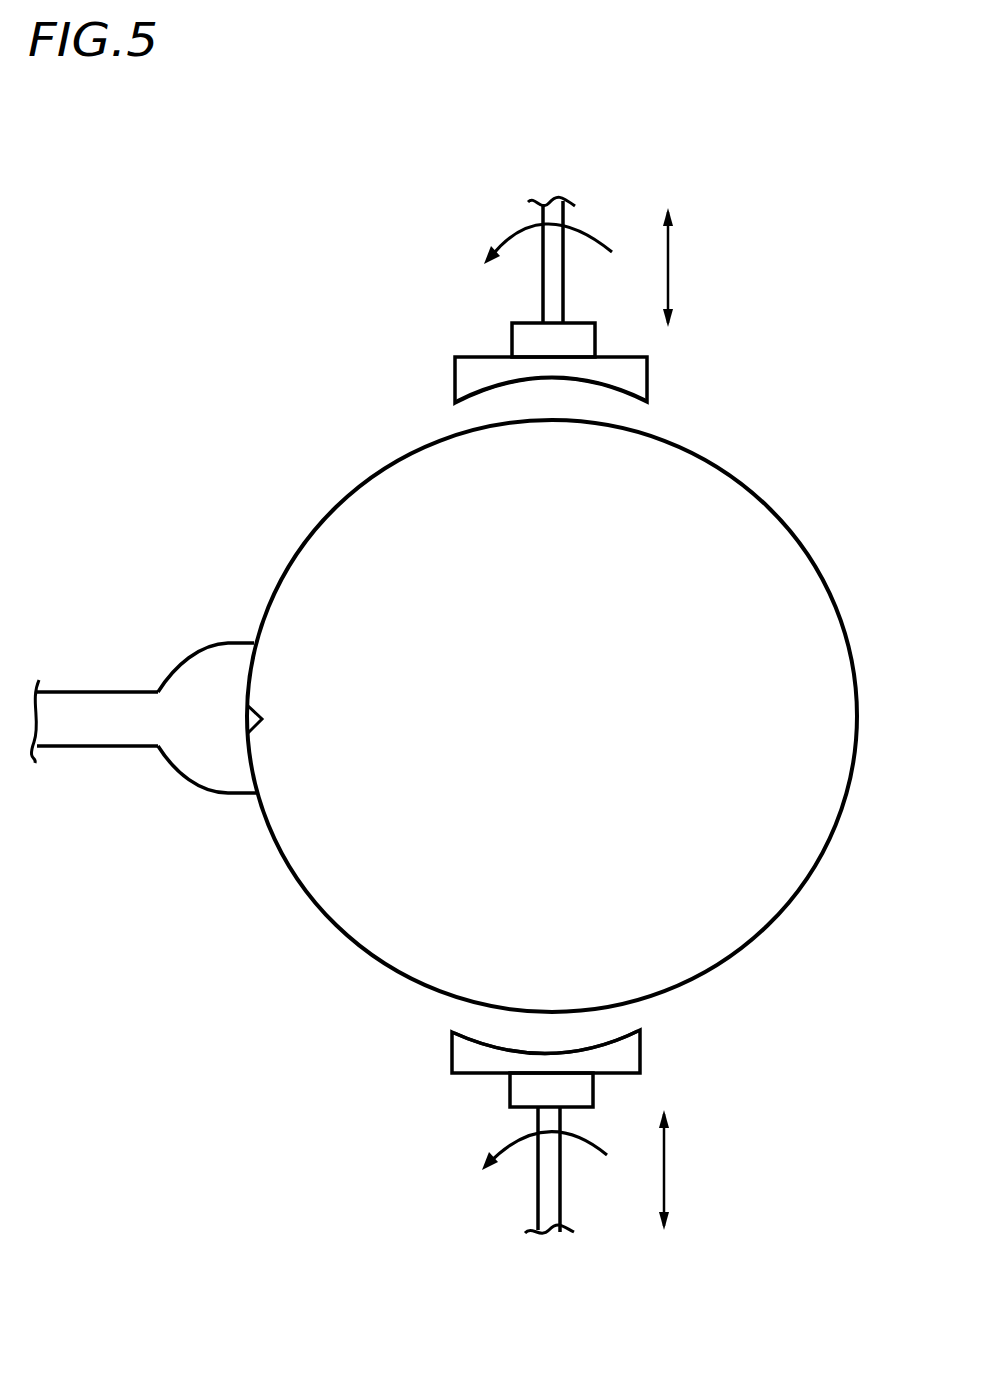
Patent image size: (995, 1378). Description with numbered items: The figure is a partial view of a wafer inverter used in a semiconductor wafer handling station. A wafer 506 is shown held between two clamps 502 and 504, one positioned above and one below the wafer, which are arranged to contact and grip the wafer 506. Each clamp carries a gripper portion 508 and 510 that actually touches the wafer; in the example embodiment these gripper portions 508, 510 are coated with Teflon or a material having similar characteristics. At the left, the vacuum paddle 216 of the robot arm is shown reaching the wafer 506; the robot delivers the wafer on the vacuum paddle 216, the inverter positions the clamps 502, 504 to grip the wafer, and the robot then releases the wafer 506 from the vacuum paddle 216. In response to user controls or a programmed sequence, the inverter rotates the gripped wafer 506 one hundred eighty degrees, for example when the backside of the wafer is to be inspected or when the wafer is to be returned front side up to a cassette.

The vacuum paddle 216 is at (207, 792).
The clamp 502 is at (649, 380).
The clamp 504 is at (645, 1062).
The wafer 506 is at (570, 761).
The gripper portion 508 is at (633, 398).
The gripper portion 510 is at (457, 1029).